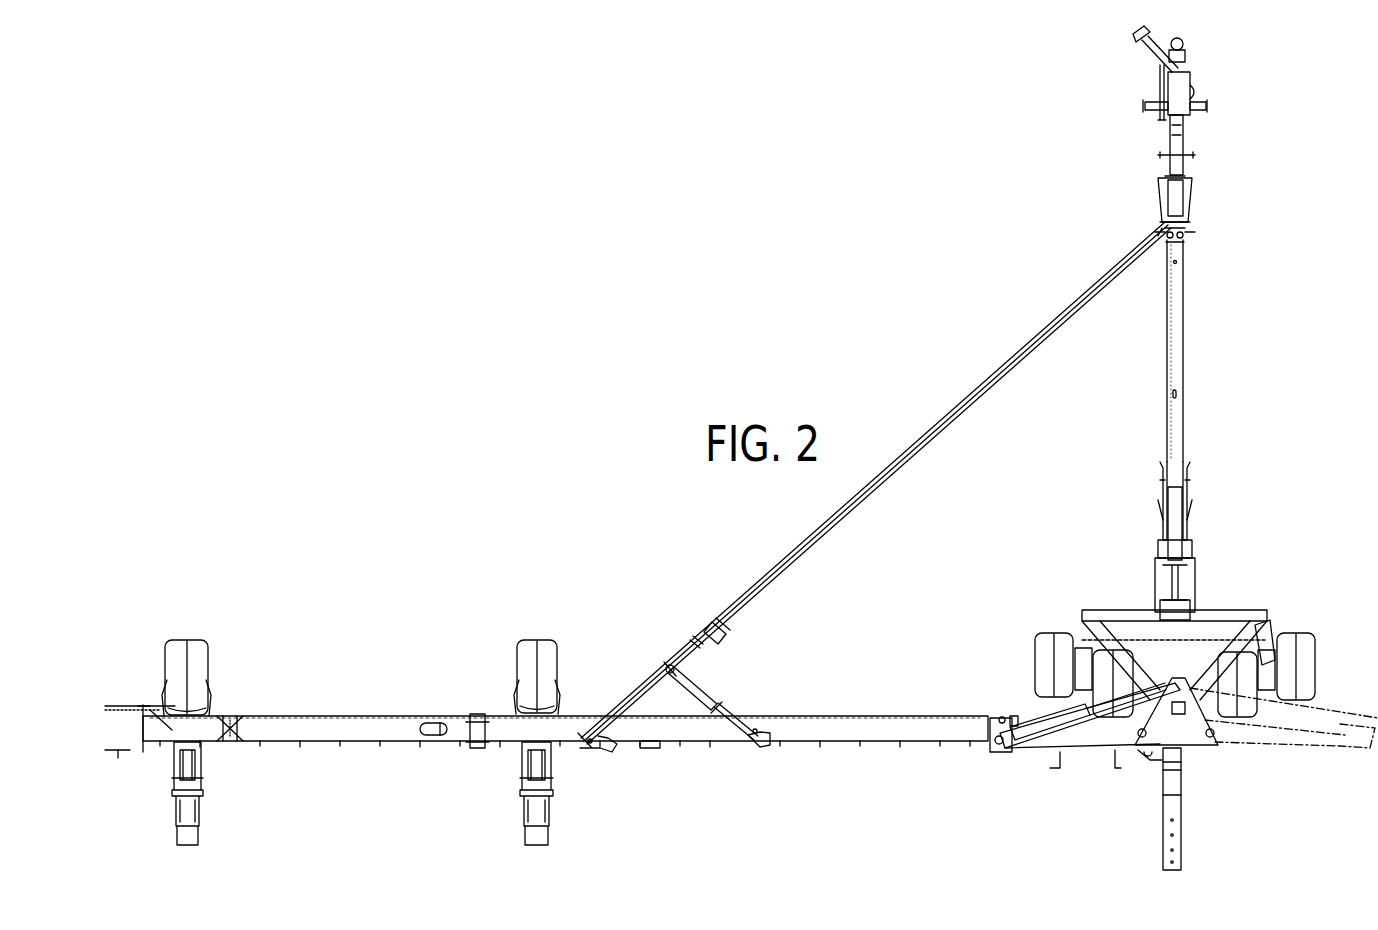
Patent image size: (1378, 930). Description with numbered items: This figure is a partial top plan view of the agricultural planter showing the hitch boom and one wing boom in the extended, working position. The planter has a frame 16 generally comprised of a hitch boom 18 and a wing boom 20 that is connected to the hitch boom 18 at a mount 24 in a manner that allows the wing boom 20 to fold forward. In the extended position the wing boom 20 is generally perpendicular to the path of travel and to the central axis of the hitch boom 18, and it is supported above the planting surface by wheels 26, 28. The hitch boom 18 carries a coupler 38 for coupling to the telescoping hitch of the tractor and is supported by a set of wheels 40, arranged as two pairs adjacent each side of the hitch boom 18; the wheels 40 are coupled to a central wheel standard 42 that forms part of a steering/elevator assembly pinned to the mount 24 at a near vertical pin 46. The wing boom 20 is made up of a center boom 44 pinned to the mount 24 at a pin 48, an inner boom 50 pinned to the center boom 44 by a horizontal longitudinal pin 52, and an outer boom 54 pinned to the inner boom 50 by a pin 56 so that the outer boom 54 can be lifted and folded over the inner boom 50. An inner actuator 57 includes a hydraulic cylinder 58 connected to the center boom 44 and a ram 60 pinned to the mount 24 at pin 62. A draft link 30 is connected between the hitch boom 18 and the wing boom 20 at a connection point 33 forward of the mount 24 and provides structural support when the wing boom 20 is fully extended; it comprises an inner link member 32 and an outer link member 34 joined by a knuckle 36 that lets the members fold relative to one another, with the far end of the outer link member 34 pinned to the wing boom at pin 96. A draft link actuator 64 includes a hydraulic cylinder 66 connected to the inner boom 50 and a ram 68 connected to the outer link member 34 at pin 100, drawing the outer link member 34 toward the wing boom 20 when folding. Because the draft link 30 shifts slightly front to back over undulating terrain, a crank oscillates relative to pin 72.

The frame 16 is at (973, 750).
The hitch boom 18 is at (1186, 300).
The wing boom 20 is at (880, 710).
The mount 24 is at (1155, 768).
The wheel 26 is at (548, 640).
The wheel 28 is at (195, 640).
The draft link 30 is at (1050, 343).
The inner link member 32 is at (1000, 372).
The connection point 33 is at (1190, 225).
The outer link member 34 is at (642, 685).
The knuckle 36 is at (745, 635).
The coupler 38 is at (1198, 80).
The wheels 40 is at (1110, 650).
The central wheel standard 42 is at (1218, 612).
The center boom 44 is at (1090, 742).
The near vertical pin 46 is at (1190, 735).
The pin 48 is at (1170, 758).
The inner boom 50 is at (888, 737).
The horizontal longitudinal pin 52 is at (1002, 716).
The outer boom 54 is at (314, 736).
The pin 56 is at (475, 752).
The inner actuator 57 is at (1035, 715).
The hydraulic cylinder 58 is at (1050, 740).
The ram 60 is at (1115, 660).
The pin 62 is at (1205, 618).
The draft link actuator 64 is at (680, 700).
The hydraulic cylinder 66 is at (735, 740).
The ram 68 is at (718, 700).
The pin 72 is at (1000, 750).
The pin 96 is at (590, 750).
The pin 100 is at (664, 662).